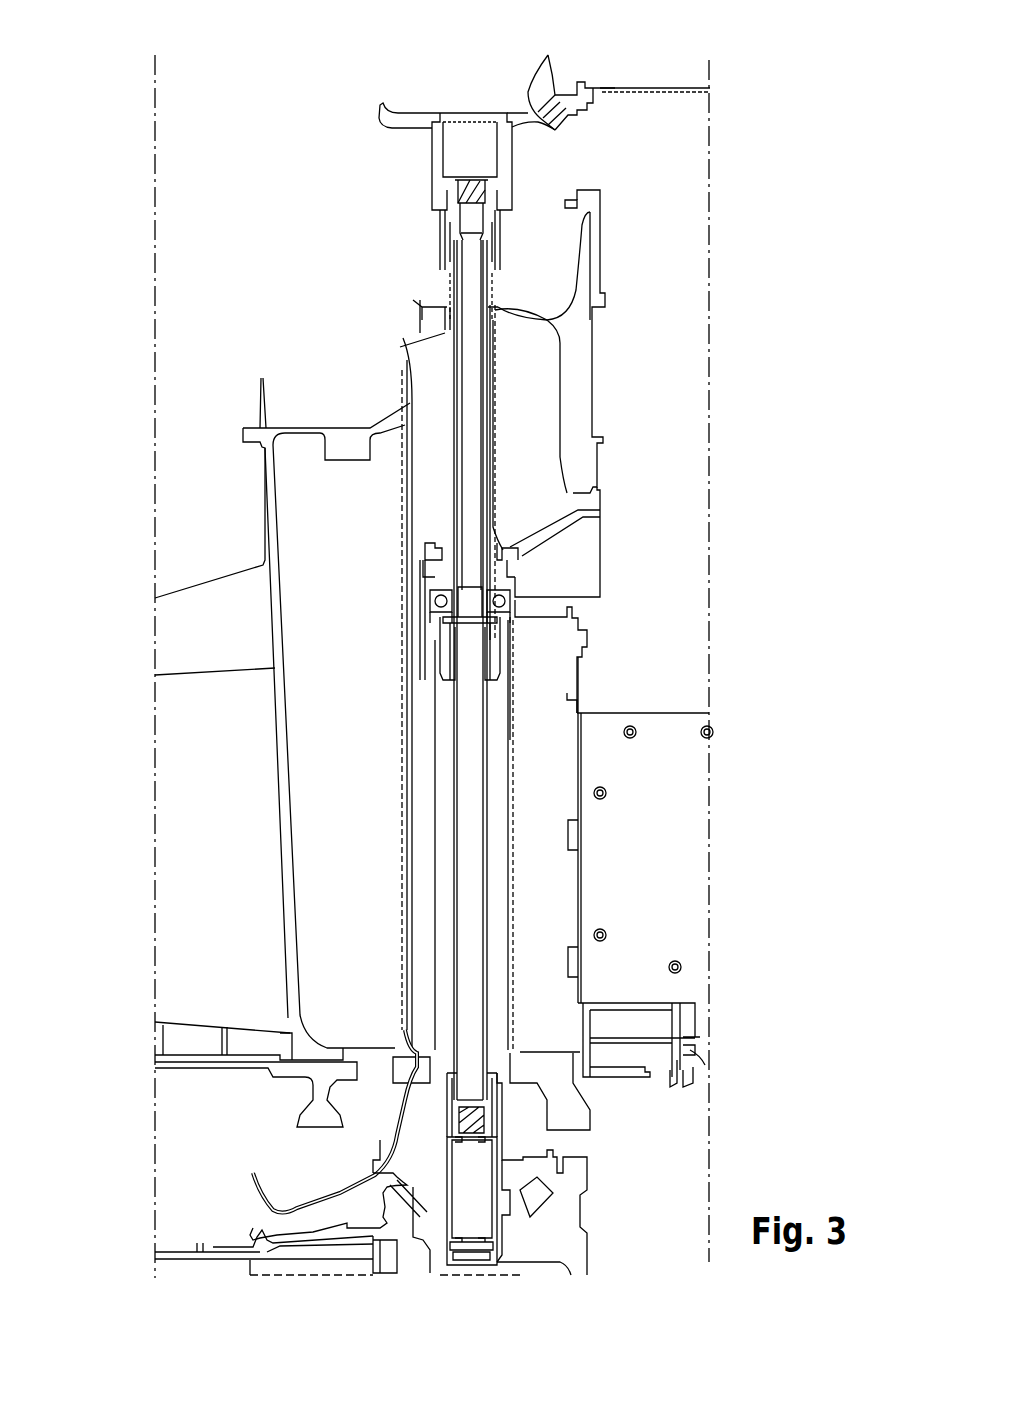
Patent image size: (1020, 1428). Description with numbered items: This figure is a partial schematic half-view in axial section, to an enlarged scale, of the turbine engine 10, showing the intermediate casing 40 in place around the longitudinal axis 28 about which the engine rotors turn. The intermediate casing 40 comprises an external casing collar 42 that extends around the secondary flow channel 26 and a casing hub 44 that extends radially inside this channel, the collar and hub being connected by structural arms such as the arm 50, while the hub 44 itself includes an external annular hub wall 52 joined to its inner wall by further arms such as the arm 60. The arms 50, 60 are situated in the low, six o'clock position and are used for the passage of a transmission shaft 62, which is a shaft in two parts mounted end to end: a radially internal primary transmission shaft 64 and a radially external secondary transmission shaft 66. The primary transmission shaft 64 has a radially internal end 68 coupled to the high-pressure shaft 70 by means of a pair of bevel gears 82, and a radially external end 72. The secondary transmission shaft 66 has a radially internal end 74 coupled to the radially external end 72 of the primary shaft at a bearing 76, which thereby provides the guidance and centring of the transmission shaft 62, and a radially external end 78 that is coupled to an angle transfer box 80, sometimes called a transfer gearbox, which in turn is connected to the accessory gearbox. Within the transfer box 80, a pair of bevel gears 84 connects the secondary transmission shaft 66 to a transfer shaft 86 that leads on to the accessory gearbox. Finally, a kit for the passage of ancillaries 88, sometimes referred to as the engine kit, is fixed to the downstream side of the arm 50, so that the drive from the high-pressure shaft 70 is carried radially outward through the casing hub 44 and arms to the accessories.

The turbine engine 10 is at (120, 236).
The secondary flow channel 26 is at (242, 845).
The longitudinal axis 28 is at (135, 0).
The intermediate casing 40 is at (583, 888).
The external casing collar 42 is at (327, 1072).
The casing hub 44 is at (612, 496).
The arm 50 is at (678, 830).
The external annular hub wall 52 is at (545, 607).
The arm 60 is at (264, 526).
The transmission shaft 62 is at (653, 612).
The primary transmission shaft 64 is at (487, 537).
The secondary transmission shaft 66 is at (490, 712).
The radially internal end 68 is at (470, 205).
The high-pressure shaft 70 is at (668, 86).
The radially external end 72 is at (480, 593).
The radially internal end 74 is at (475, 637).
The bearing 76 is at (440, 597).
The radially external end 78 is at (517, 1057).
The angle transfer box 80 is at (588, 1203).
The pair of bevel gears 82 is at (556, 80).
The pair of bevel gears 84 is at (432, 1250).
The transfer shaft 86 is at (180, 1255).
The kit for the passage of ancillaries 88 is at (670, 713).